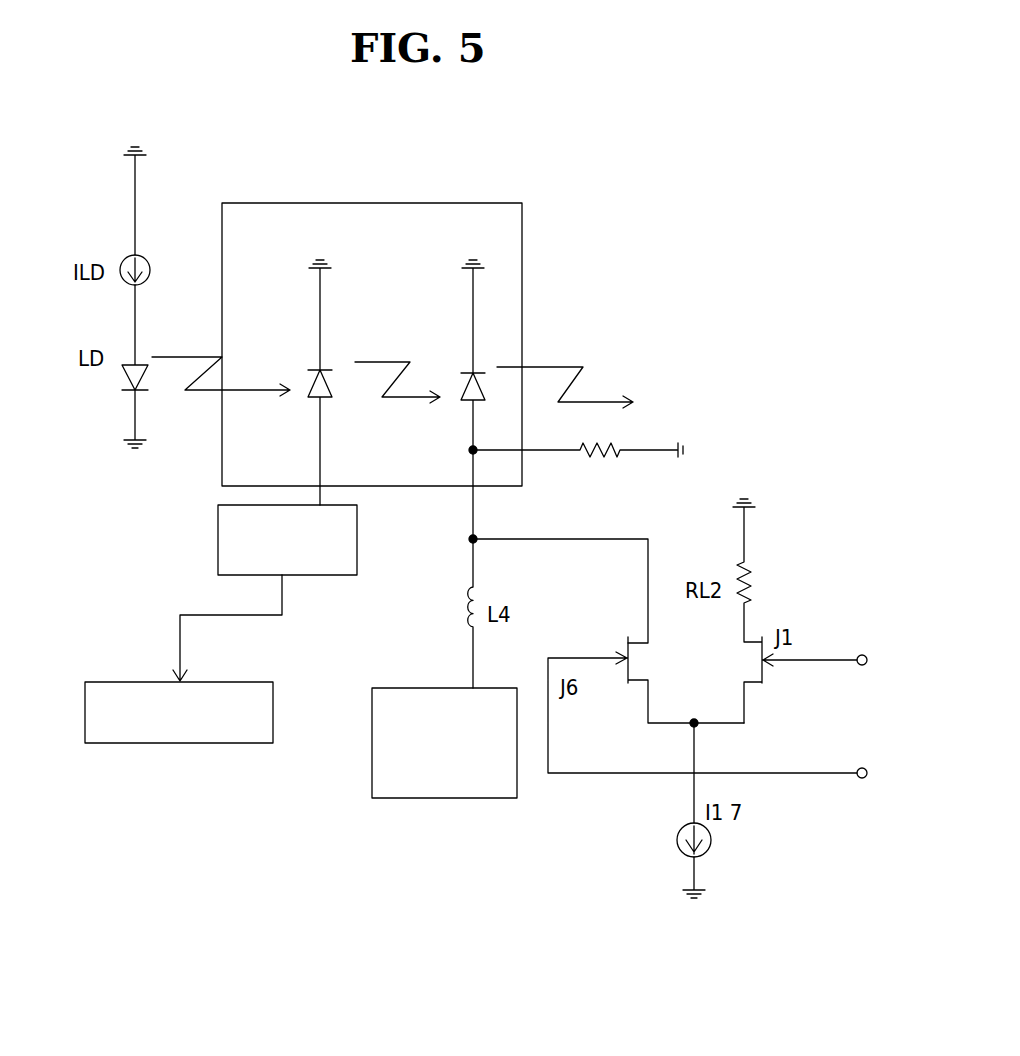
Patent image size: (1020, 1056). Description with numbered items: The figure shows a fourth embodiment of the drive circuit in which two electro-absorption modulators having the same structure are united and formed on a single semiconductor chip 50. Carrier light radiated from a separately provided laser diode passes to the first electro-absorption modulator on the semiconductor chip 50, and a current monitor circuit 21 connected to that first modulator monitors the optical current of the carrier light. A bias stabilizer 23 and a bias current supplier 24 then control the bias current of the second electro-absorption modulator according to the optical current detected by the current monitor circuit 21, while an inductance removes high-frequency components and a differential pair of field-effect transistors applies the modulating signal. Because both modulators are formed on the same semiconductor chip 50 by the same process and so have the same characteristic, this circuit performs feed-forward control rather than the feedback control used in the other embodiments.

The semiconductor chip 50 is at (523, 206).
The current monitor circuit 21 is at (358, 514).
The bias stabilizer 23 is at (193, 744).
The bias current supplier 24 is at (435, 800).